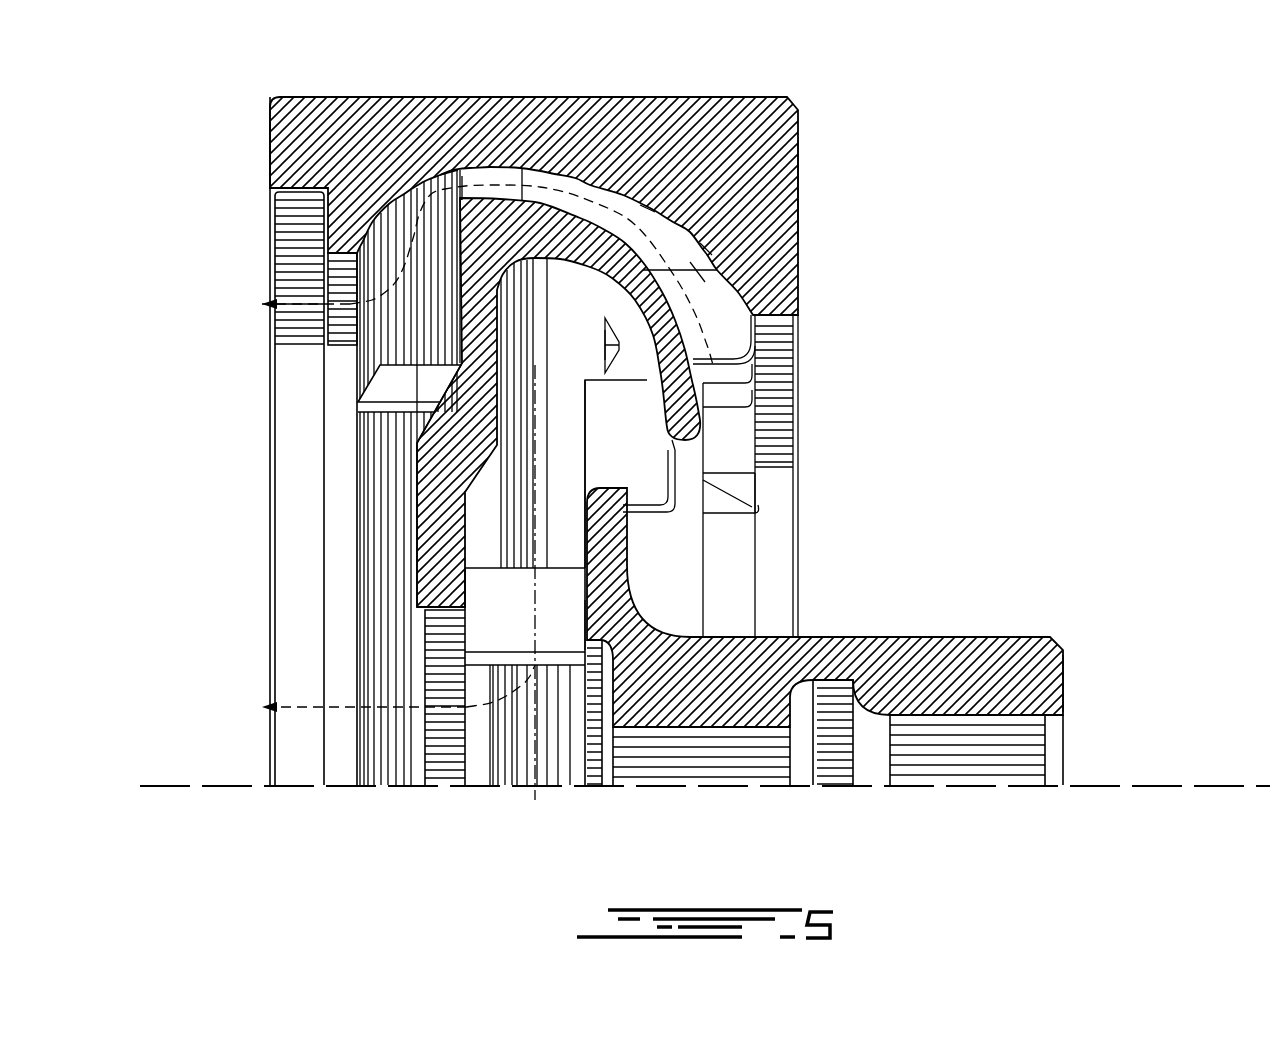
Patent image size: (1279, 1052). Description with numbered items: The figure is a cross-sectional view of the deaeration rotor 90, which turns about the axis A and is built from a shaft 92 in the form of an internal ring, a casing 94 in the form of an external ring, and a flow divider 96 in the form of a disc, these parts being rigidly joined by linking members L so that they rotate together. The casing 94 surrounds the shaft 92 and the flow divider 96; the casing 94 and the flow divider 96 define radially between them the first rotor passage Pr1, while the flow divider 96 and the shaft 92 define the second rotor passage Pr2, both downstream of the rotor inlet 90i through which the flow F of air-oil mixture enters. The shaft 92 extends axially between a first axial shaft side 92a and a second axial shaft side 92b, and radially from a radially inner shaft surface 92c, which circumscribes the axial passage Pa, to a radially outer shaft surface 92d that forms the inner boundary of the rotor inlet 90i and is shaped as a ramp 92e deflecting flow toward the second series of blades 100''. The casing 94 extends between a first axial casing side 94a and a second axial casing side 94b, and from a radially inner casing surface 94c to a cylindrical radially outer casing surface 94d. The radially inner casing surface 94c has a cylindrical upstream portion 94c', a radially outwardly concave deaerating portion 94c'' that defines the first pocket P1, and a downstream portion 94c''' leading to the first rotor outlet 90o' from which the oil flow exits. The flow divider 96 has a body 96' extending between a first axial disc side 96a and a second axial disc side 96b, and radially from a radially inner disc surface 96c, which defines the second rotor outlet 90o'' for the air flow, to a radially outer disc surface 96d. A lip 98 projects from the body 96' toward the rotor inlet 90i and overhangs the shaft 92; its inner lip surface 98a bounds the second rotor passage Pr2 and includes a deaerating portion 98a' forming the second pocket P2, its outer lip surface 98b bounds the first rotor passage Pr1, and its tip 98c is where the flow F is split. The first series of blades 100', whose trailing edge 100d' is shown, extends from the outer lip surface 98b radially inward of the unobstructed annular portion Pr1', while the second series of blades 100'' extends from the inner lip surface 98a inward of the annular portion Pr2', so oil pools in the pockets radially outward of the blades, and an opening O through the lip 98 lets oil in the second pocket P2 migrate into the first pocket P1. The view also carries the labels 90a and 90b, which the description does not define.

The rotor 90 is at (1196, 156).
The upper sealing assembly 90a is at (876, 136).
The flexible member assembly 90b is at (160, 108).
The rotor inlet 90i is at (794, 323).
The first rotor outlet 90o' is at (252, 264).
The second rotor outlet 90o'' is at (337, 618).
The shaft 92 is at (1040, 843).
The first axial shaft side 92a is at (1063, 683).
The second axial shaft side 92b is at (567, 613).
The radially inner shaft surface 92c is at (955, 716).
The radially outer shaft surface 92d is at (985, 637).
The ramp 92e is at (627, 491).
The casing 94 is at (946, 190).
The first axial casing side 94a is at (800, 188).
The second axial casing side 94b is at (270, 152).
The radially inner casing surface 94c is at (540, 207).
The upstream portion 94c' is at (837, 476).
The deaerating portion 94c'' is at (706, 249).
The downstream portion 94c''' is at (268, 294).
The radially outer casing surface 94d is at (573, 97).
The flow divider 96 is at (382, 439).
The body 96' is at (336, 408).
The first axial disc side 96a is at (525, 676).
The second axial disc side 96b is at (417, 500).
The radially inner disc surface 96c is at (445, 612).
The radially outer disc surface 96d is at (467, 121).
The lip 98 is at (651, 402).
The inner lip surface 98a is at (605, 474).
The deaerating portion 98a' is at (544, 413).
The outer lip surface 98b is at (620, 386).
The tip 98c is at (683, 438).
The first series of blades 100' is at (804, 358).
The second series of blades 100'' is at (769, 518).
The trailing edge 100d' is at (409, 388).
The first pocket P1 is at (668, 238).
The second pocket P2 is at (592, 331).
The first rotor passage Pr1 is at (275, 331).
The annular portion Pr1' is at (782, 271).
The second rotor passage Pr2 is at (367, 714).
The annular portion Pr2' is at (802, 510).
The axial passage Pa is at (1016, 766).
The linking members L is at (378, 384).
The opening O is at (605, 344).
The flow F is at (684, 514).
The axis A is at (1186, 788).